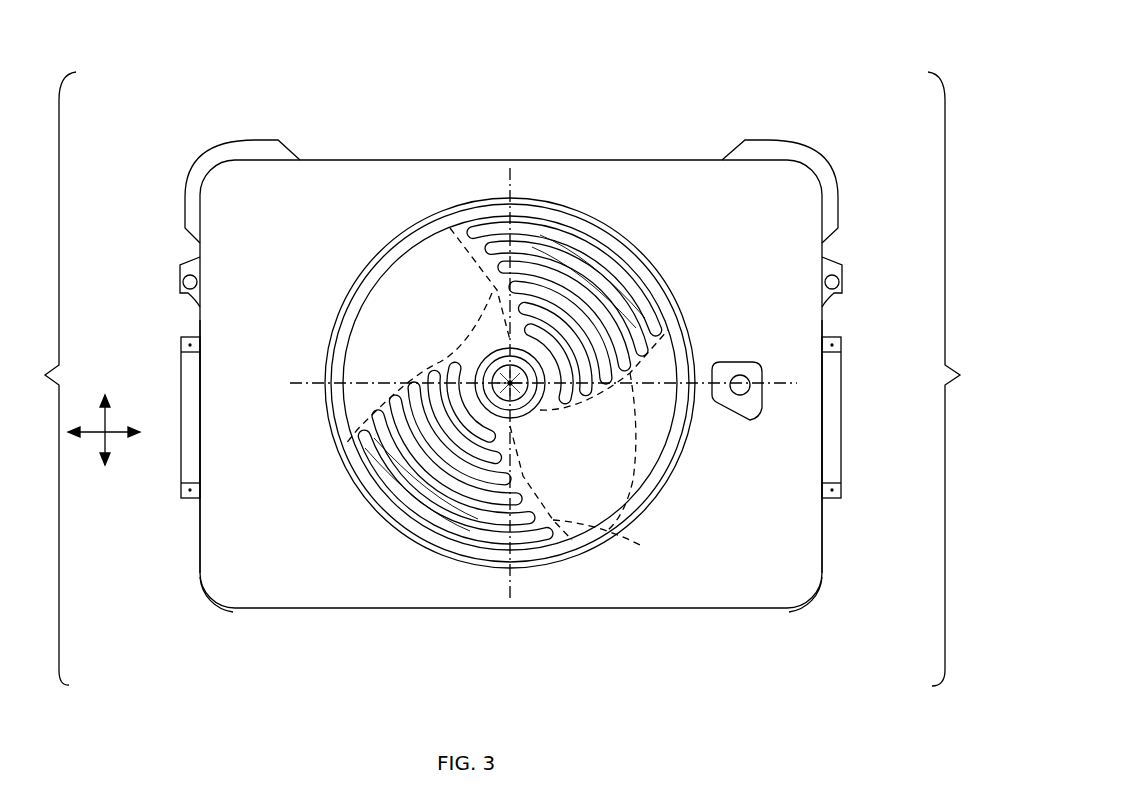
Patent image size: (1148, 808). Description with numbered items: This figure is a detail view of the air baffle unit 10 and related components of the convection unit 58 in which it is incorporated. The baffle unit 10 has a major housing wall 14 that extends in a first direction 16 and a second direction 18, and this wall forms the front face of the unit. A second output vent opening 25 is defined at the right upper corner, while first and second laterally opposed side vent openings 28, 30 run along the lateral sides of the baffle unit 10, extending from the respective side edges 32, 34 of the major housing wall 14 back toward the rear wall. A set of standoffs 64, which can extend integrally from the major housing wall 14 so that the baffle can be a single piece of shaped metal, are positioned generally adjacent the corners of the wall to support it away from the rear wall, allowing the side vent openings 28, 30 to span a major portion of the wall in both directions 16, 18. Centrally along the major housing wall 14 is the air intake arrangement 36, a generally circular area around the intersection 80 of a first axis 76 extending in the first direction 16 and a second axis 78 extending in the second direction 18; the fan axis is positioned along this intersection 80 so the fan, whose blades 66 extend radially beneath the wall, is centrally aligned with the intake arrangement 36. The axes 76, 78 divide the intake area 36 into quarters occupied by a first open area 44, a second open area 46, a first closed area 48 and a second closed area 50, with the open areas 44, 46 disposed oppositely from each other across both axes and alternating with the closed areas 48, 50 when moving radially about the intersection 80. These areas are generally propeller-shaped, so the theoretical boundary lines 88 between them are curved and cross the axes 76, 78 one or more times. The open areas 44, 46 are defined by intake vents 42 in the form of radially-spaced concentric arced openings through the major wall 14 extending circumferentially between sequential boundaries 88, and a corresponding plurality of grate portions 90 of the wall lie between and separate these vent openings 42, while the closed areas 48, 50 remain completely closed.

The air baffle unit 10 is at (745, 228).
The major housing wall 14 is at (333, 219).
The first direction 16 is at (120, 437).
The second direction 18 is at (108, 413).
The second output vent opening 25 is at (798, 140).
The first side vent opening 28 is at (174, 479).
The second side vent opening 30 is at (843, 384).
The side edge 32 is at (200, 537).
The side edge 34 is at (823, 528).
The air intake arrangement 36 is at (680, 485).
The intake vents 42 is at (630, 373).
The first open area 44 is at (655, 348).
The second open area 46 is at (406, 394).
The first closed area 48 is at (410, 299).
The second closed area 50 is at (604, 466).
The convection unit 58 is at (948, 102).
The standoffs 64 is at (174, 287).
The blades 66 is at (597, 303).
The first axis 76 is at (790, 387).
The second axis 78 is at (500, 592).
The intersection 80 is at (515, 395).
The boundary lines 88 is at (488, 316).
The grate portions 90 is at (548, 242).